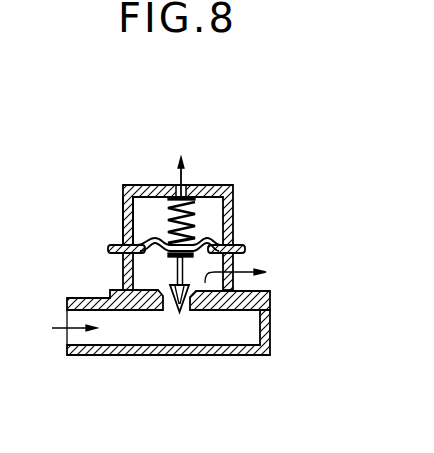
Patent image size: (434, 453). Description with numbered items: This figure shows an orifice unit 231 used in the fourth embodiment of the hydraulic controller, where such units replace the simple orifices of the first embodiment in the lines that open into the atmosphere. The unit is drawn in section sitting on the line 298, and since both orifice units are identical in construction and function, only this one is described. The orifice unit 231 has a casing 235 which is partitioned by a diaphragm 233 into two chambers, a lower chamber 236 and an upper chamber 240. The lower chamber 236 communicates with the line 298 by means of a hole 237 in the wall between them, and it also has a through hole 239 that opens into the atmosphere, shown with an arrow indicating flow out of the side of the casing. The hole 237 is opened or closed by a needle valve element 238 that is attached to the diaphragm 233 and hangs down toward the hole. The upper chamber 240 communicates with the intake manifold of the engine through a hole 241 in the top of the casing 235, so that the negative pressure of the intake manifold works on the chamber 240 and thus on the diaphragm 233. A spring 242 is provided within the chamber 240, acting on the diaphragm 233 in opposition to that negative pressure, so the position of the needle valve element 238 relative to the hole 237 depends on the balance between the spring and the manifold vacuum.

The orifice unit 231 is at (240, 201).
The diaphragm 233 is at (236, 240).
The casing 235 is at (124, 213).
The chamber 236 is at (145, 263).
The hole 237 is at (180, 312).
The needle valve element 238 is at (160, 289).
The through hole 239 is at (233, 275).
The chamber 240 is at (236, 212).
The hole 241 is at (176, 184).
The spring 242 is at (196, 184).
The line 298 is at (100, 343).